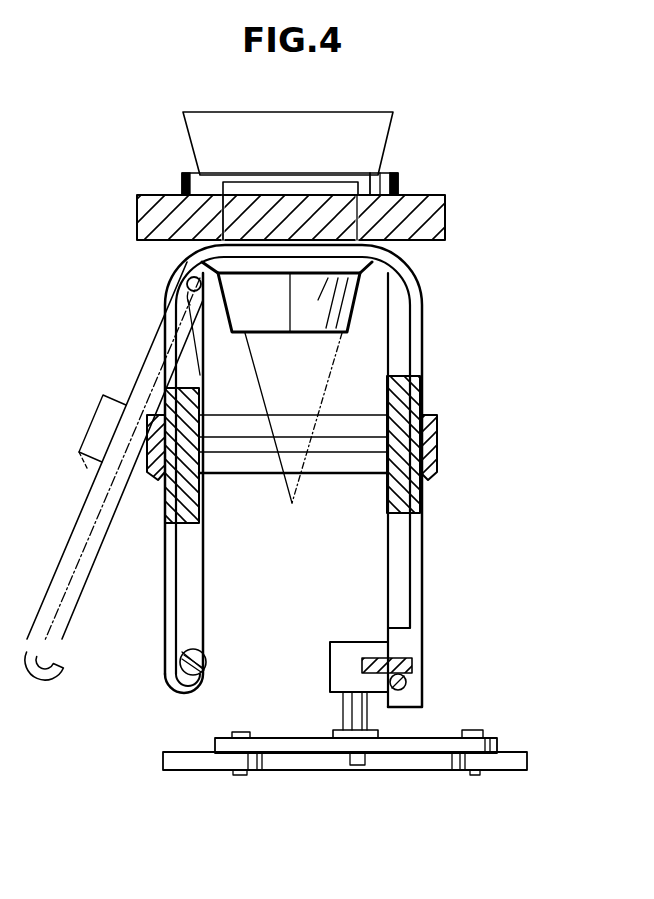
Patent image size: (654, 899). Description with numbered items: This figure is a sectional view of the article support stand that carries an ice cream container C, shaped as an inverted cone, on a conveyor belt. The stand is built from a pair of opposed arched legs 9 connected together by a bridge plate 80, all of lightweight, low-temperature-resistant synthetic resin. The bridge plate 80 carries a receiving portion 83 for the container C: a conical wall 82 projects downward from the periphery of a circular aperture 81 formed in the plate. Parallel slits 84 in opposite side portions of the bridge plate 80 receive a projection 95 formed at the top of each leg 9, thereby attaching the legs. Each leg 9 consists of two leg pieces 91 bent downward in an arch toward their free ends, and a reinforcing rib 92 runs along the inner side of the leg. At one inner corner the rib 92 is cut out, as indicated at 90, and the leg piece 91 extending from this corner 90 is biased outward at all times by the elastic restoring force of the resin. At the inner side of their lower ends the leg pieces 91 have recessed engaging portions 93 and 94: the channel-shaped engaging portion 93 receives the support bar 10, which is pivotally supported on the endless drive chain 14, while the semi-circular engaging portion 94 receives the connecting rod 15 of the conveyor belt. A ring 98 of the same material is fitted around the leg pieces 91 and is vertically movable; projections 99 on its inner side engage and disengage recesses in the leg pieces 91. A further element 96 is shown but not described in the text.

The ice cream container C is at (244, 128).
The arched leg 9 is at (428, 330).
The support bar 10 is at (395, 666).
The drive chain 14 is at (430, 745).
The connecting rod 15 is at (200, 655).
The bridge plate 80 is at (145, 210).
The circular aperture 81 is at (378, 170).
The conical wall 82 is at (403, 193).
The receiving portion 83 is at (433, 133).
The slit 84 is at (243, 176).
The cut-out corner 90 is at (178, 288).
The leg piece 91 is at (78, 520).
The reinforcing rib 92 is at (185, 367).
The channel-shaped engaging portion 93 is at (407, 689).
The semi-circular engaging portion 94 is at (207, 670).
The projection 95 is at (334, 290).
The bearing block 96 is at (165, 395).
The ring 98 is at (338, 475).
The projection 99 is at (255, 445).